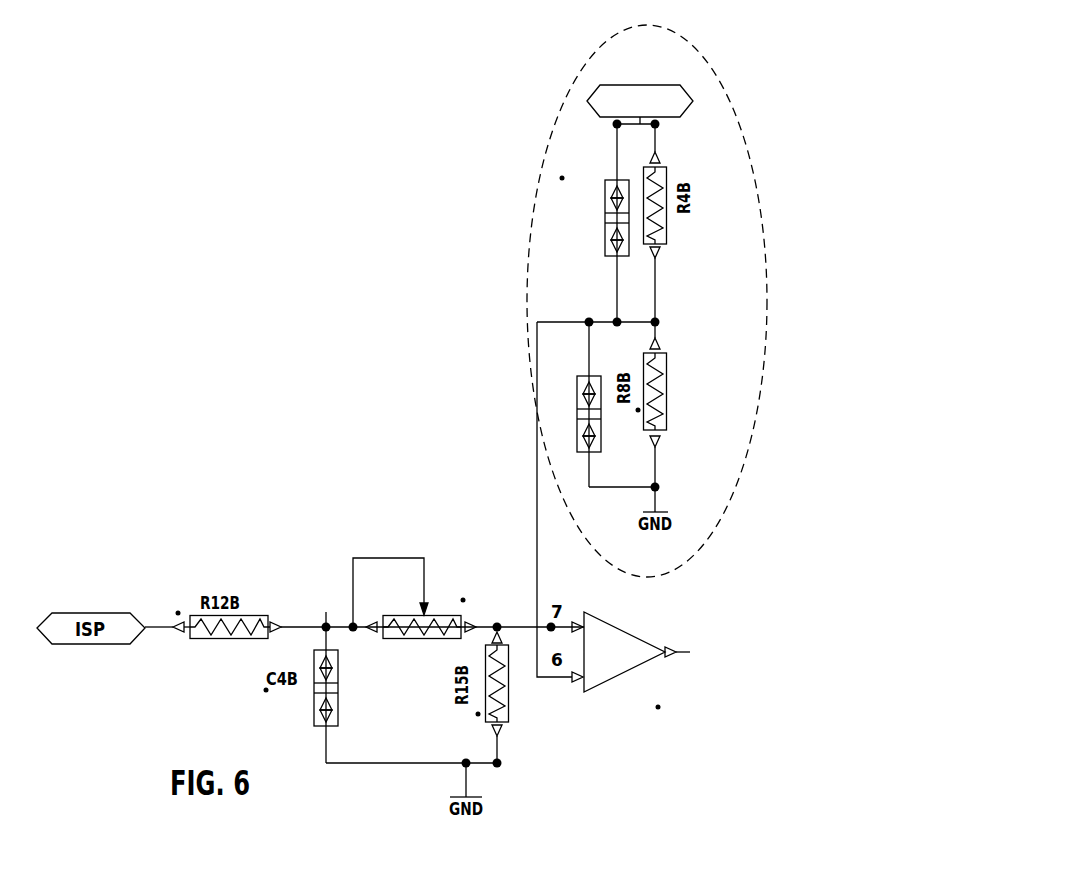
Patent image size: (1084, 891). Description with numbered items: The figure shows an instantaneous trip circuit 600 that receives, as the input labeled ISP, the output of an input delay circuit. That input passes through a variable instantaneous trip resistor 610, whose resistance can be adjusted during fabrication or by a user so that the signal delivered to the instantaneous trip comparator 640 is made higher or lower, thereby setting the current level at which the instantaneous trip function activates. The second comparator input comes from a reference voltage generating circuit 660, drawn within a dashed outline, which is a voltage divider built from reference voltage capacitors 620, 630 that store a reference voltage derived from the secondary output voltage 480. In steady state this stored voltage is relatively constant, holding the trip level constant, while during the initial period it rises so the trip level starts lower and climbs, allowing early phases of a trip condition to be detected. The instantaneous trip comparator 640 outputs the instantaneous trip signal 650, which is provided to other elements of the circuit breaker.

The secondary output voltage 480 is at (640, 85).
The instantaneous trip circuit 600 is at (262, 362).
The variable instantaneous trip resistor 610 is at (436, 615).
The reference voltage capacitor 620 is at (605, 226).
The reference voltage capacitor 630 is at (578, 432).
The instantaneous trip comparator 640 is at (585, 693).
The instantaneous trip signal 650 is at (690, 653).
The reference voltage generating circuit 660 is at (766, 335).